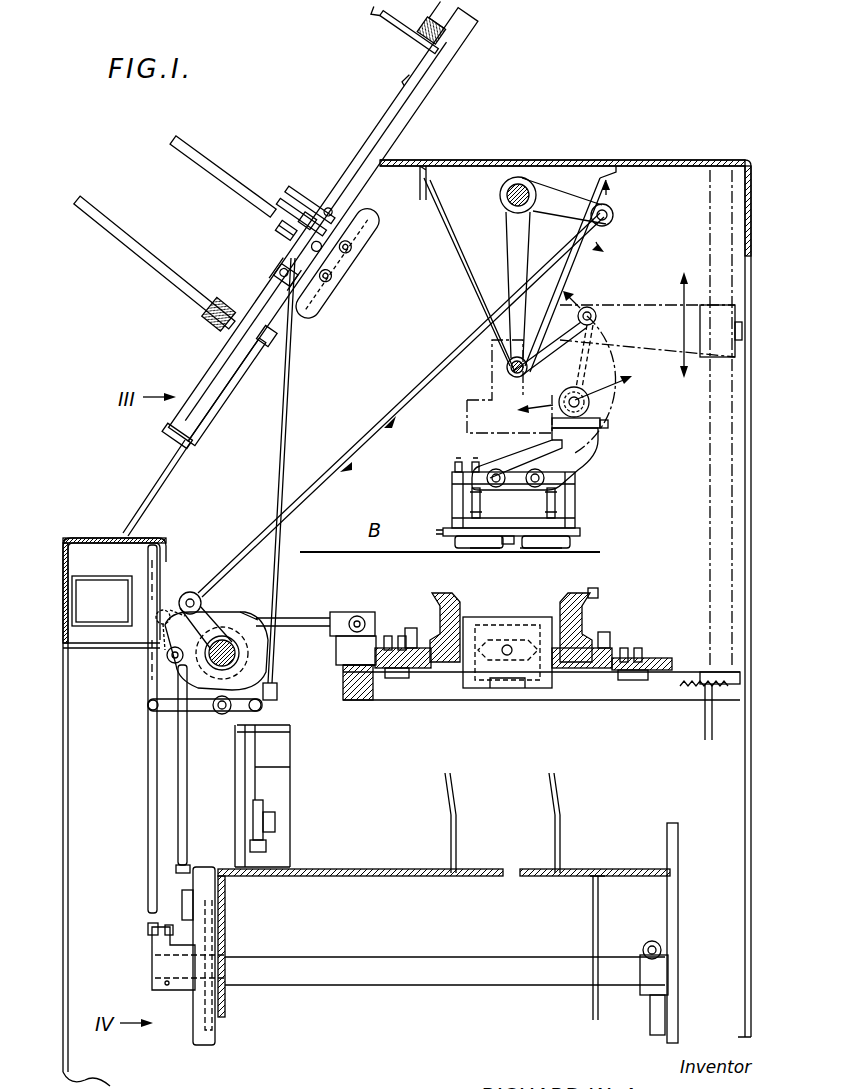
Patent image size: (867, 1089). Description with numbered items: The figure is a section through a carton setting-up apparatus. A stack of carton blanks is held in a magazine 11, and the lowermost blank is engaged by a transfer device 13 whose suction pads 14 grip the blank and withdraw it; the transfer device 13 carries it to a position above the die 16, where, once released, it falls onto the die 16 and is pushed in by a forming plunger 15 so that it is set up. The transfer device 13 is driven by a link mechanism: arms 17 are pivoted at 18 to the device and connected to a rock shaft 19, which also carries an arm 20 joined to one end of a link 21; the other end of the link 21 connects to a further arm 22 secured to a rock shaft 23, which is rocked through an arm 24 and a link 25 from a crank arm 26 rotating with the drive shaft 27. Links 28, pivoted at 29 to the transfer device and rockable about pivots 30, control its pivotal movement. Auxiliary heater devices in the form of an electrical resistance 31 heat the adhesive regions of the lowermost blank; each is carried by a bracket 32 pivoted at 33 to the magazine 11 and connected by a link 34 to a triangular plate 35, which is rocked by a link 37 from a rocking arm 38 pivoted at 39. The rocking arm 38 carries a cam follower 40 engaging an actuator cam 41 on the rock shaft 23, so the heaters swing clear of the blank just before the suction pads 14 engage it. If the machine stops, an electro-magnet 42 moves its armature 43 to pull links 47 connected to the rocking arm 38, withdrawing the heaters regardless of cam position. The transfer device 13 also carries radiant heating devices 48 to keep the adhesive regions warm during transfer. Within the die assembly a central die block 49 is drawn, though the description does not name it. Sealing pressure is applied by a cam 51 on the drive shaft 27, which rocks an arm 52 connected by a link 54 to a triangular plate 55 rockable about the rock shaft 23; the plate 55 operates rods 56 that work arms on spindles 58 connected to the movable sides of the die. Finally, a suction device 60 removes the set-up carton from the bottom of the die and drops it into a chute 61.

The magazine 11 is at (345, 82).
The transfer device 13 is at (583, 495).
The suction pads 14 is at (505, 554).
The forming plunger 15 is at (467, 433).
The die 16 is at (588, 596).
The arms 17 is at (512, 238).
The pivot 18 is at (590, 403).
The rock shaft 19 is at (519, 178).
The arm 20 is at (560, 200).
The link 21 is at (455, 357).
The further arm 22 is at (208, 620).
The rock shaft 23 is at (240, 656).
The arm 24 is at (182, 592).
The link 25 is at (148, 802).
The crank arm 26 is at (156, 943).
The drive shaft 27 is at (483, 978).
The links 28 is at (596, 325).
The pivot 29 is at (590, 312).
The pivots 30 is at (508, 370).
The electrical resistance 31 is at (355, 228).
The bracket 32 is at (300, 195).
The pivot 33 is at (288, 205).
The link 34 is at (283, 240).
The triangular plate 35 is at (283, 262).
The link 37 is at (293, 340).
The rocking arm 38 is at (190, 708).
The pivot 39 is at (148, 705).
The cam follower 40 is at (216, 712).
The actuator cam 41 is at (258, 665).
The electro-magnet 42 is at (290, 750).
The armature 43 is at (268, 812).
The links 47 is at (292, 774).
The electrical radiant heating devices 48 is at (578, 538).
The die block 49 is at (545, 635).
The cam 51 is at (214, 1032).
The arm 52 is at (200, 890).
The link 54 is at (187, 754).
The triangular plate 55 is at (268, 618).
The rods 56 is at (318, 618).
The spindles 58 is at (360, 608).
The suction device 60 is at (520, 703).
The chute 61 is at (550, 799).